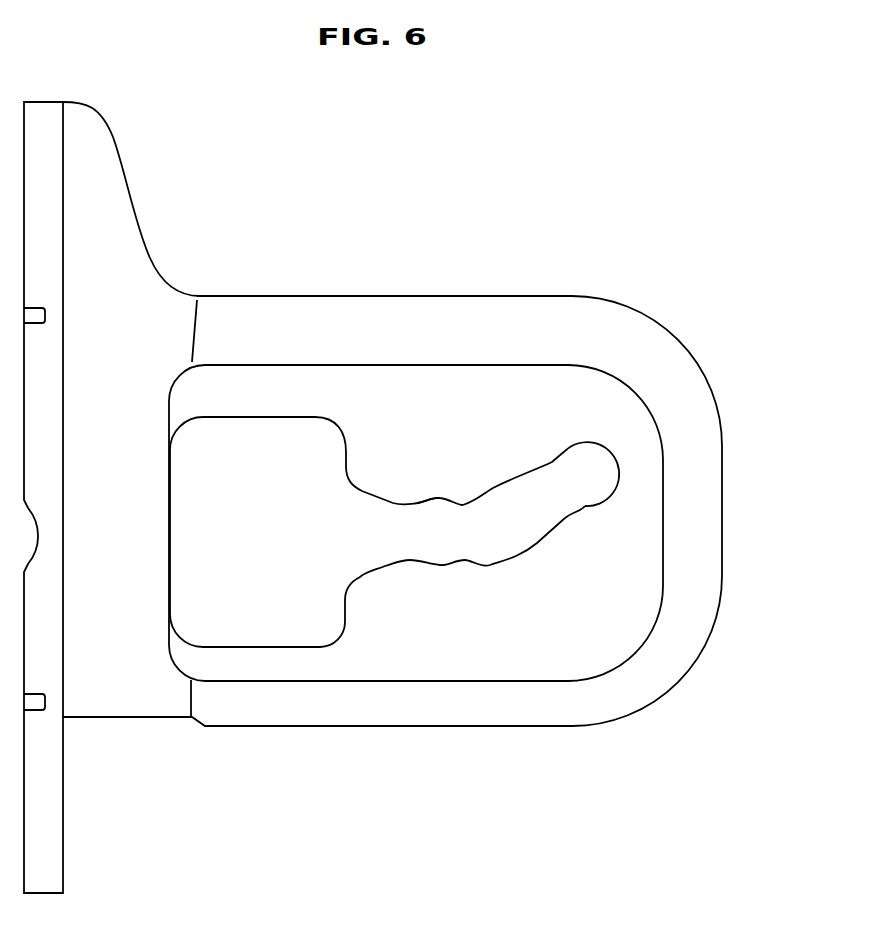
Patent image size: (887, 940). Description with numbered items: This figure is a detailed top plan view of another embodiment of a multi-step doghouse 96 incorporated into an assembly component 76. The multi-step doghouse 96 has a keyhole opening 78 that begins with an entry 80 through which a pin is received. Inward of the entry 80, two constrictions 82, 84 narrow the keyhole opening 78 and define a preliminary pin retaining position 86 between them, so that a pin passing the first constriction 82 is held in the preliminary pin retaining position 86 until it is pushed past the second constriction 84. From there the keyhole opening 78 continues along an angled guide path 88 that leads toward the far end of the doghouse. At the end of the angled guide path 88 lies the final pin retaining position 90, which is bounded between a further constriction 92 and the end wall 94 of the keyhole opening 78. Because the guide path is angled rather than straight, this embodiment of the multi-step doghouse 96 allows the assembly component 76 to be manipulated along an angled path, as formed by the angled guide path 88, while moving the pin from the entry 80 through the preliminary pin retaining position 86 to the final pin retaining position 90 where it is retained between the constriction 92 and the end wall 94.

The assembly component 76 is at (75, 107).
The keyhole opening 78 is at (324, 551).
The entry 80 is at (377, 492).
The constriction 82 is at (407, 561).
The constriction 84 is at (462, 502).
The preliminary pin retaining position 86 is at (433, 537).
The angled guide path 88 is at (531, 545).
The final pin retaining position 90 is at (592, 470).
The constriction 92 is at (578, 513).
The end wall 94 is at (618, 462).
The multi-step doghouse 96 is at (618, 251).